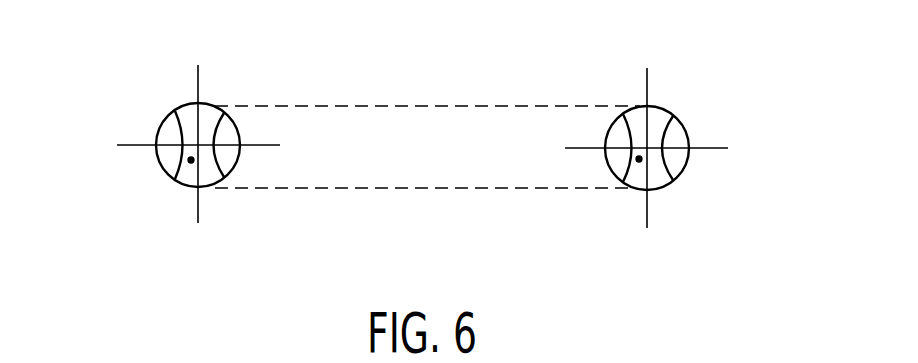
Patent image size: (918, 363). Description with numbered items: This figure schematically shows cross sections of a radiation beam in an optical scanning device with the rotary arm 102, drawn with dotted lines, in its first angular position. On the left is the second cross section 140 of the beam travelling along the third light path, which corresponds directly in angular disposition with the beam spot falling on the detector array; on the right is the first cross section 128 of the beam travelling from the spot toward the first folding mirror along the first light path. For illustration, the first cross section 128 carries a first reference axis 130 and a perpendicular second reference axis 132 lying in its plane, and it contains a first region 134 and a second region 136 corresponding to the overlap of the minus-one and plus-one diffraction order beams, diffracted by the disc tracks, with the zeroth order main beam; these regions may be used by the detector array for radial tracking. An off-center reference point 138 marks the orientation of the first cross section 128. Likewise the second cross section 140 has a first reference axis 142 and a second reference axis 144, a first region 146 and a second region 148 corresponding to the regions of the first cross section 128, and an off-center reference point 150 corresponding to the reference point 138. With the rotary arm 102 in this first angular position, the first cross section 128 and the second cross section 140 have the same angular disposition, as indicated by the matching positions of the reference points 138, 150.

The rotary arm 102 is at (485, 105).
The first cross section 128 is at (657, 120).
The first reference axis 130 is at (713, 150).
The second reference axis 132 is at (642, 208).
The first region 134 is at (615, 158).
The second region 136 is at (677, 138).
The off-center reference point 138 is at (643, 162).
The second cross section 140 is at (207, 115).
The first reference axis 142 is at (130, 145).
The second reference axis 144 is at (197, 202).
The first region 146 is at (172, 157).
The second region 148 is at (230, 157).
The off-center reference point 150 is at (185, 165).